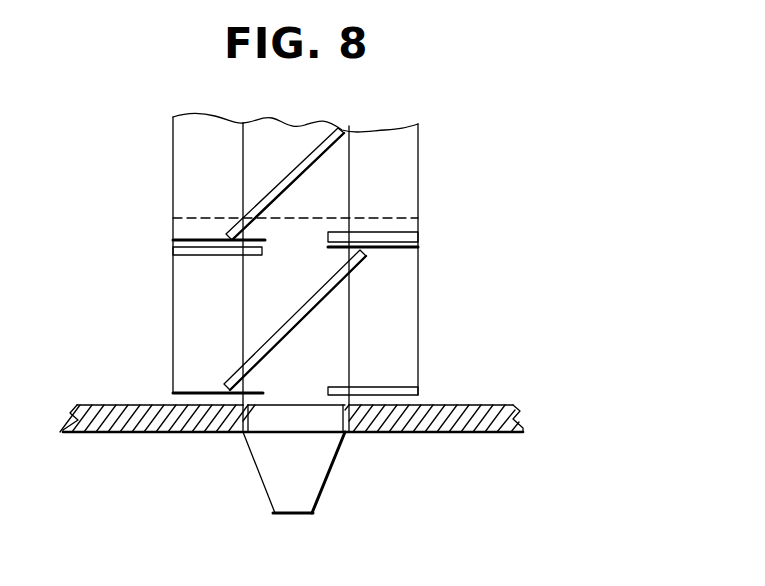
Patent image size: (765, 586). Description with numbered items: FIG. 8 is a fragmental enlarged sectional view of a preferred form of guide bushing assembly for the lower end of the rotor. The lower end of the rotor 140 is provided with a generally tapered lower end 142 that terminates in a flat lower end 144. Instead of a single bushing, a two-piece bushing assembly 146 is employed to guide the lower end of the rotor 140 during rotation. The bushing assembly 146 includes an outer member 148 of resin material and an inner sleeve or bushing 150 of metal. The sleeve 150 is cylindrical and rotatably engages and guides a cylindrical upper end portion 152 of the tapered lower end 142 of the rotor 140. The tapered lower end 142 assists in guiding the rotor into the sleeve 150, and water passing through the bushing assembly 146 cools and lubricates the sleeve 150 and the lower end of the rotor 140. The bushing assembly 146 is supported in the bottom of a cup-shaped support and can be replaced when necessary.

The rotor 140 is at (347, 128).
The tapered lower end 142 is at (322, 453).
The flat lower end 144 is at (293, 517).
The bushing assembly 146 is at (448, 403).
The outer member 148 is at (497, 420).
The inner sleeve 150 is at (220, 432).
The cylindrical upper end portion 152 is at (295, 423).